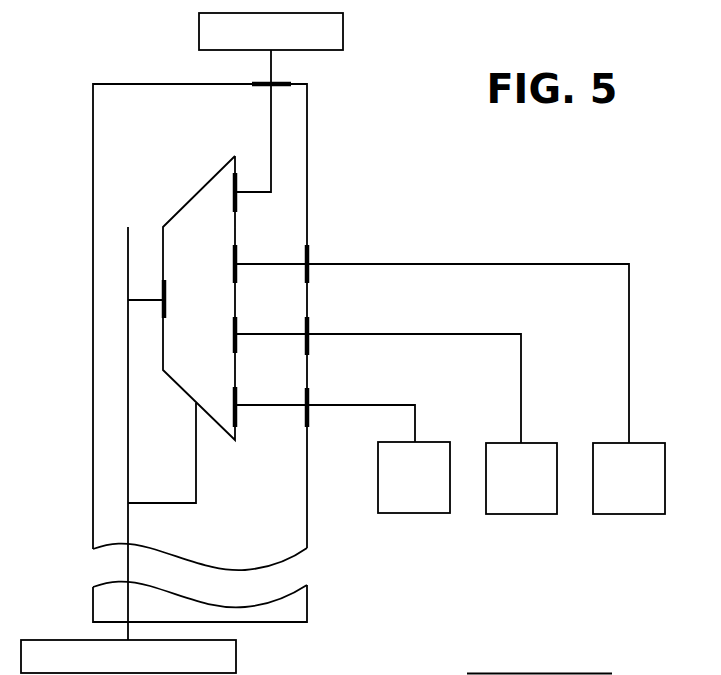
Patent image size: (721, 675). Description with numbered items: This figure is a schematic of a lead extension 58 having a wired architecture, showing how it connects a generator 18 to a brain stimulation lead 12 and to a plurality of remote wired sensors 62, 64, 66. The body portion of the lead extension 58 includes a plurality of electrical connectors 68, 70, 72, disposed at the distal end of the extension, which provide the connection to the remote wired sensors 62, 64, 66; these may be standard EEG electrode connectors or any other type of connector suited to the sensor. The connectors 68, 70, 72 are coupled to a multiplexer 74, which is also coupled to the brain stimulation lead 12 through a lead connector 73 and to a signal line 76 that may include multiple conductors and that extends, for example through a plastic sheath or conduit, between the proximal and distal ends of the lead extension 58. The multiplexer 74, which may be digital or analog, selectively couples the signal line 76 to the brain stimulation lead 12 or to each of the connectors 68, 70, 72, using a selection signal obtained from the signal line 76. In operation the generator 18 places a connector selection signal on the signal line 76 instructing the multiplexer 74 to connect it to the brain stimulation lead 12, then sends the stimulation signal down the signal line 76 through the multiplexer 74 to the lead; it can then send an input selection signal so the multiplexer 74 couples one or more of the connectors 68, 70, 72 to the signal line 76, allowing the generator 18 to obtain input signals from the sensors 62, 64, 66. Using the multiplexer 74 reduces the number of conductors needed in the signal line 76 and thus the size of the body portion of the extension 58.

The brain stimulation lead 12 is at (343, 30).
The generator 18 is at (236, 657).
The lead extension 58 is at (93, 227).
The remote wired sensor 62 is at (413, 513).
The remote wired sensor 64 is at (521, 514).
The remote wired sensor 66 is at (629, 514).
The electrical connector 68 is at (307, 401).
The electrical connector 70 is at (307, 328).
The electrical connector 72 is at (307, 256).
The lead connector 73 is at (263, 84).
The multiplexer 74 is at (235, 228).
The signal line 76 is at (128, 317).